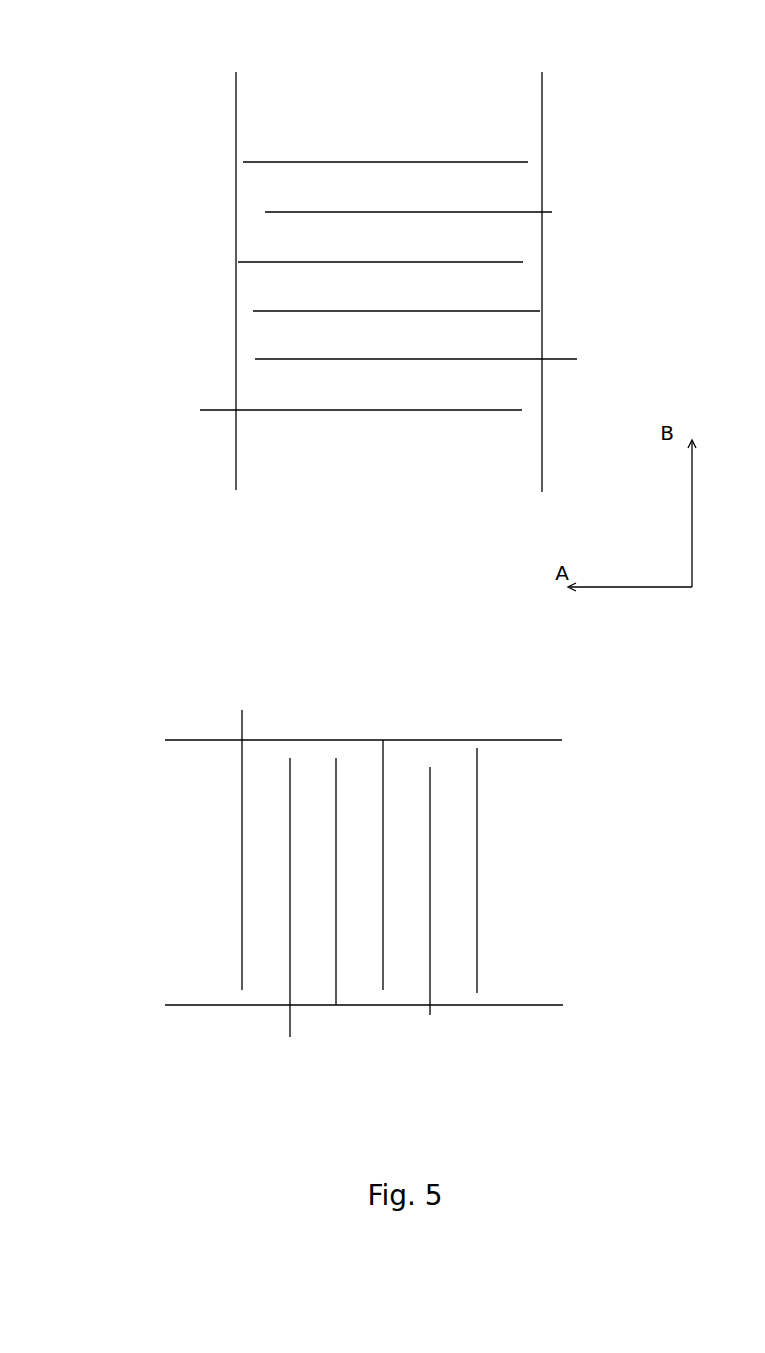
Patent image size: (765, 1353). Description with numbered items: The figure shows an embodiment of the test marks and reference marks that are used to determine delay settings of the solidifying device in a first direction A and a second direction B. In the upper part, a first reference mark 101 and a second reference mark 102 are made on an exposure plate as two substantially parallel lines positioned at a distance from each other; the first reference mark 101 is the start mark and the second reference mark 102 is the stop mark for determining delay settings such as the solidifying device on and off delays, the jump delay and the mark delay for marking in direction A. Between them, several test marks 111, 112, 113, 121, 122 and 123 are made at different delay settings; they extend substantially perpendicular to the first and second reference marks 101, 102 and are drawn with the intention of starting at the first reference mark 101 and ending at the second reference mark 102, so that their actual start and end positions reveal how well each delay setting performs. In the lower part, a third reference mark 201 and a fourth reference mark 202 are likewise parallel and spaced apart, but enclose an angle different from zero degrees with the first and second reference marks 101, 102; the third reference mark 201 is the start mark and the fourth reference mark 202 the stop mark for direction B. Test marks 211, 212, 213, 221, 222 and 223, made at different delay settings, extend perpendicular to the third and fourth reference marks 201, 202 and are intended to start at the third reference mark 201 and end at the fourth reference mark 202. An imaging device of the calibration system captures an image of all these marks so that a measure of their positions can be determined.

The first reference mark 101 is at (542, 278).
The second reference mark 102 is at (236, 297).
The test mark 111 is at (458, 410).
The test mark 112 is at (290, 359).
The test mark 113 is at (338, 311).
The test mark 121 is at (315, 162).
The test mark 122 is at (478, 211).
The test mark 123 is at (395, 262).
The third reference mark 201 is at (367, 1005).
The fourth reference mark 202 is at (347, 740).
The test mark 211 is at (242, 935).
The test mark 212 is at (290, 787).
The test mark 213 is at (336, 830).
The test mark 221 is at (477, 810).
The test mark 222 is at (430, 952).
The test mark 223 is at (383, 878).